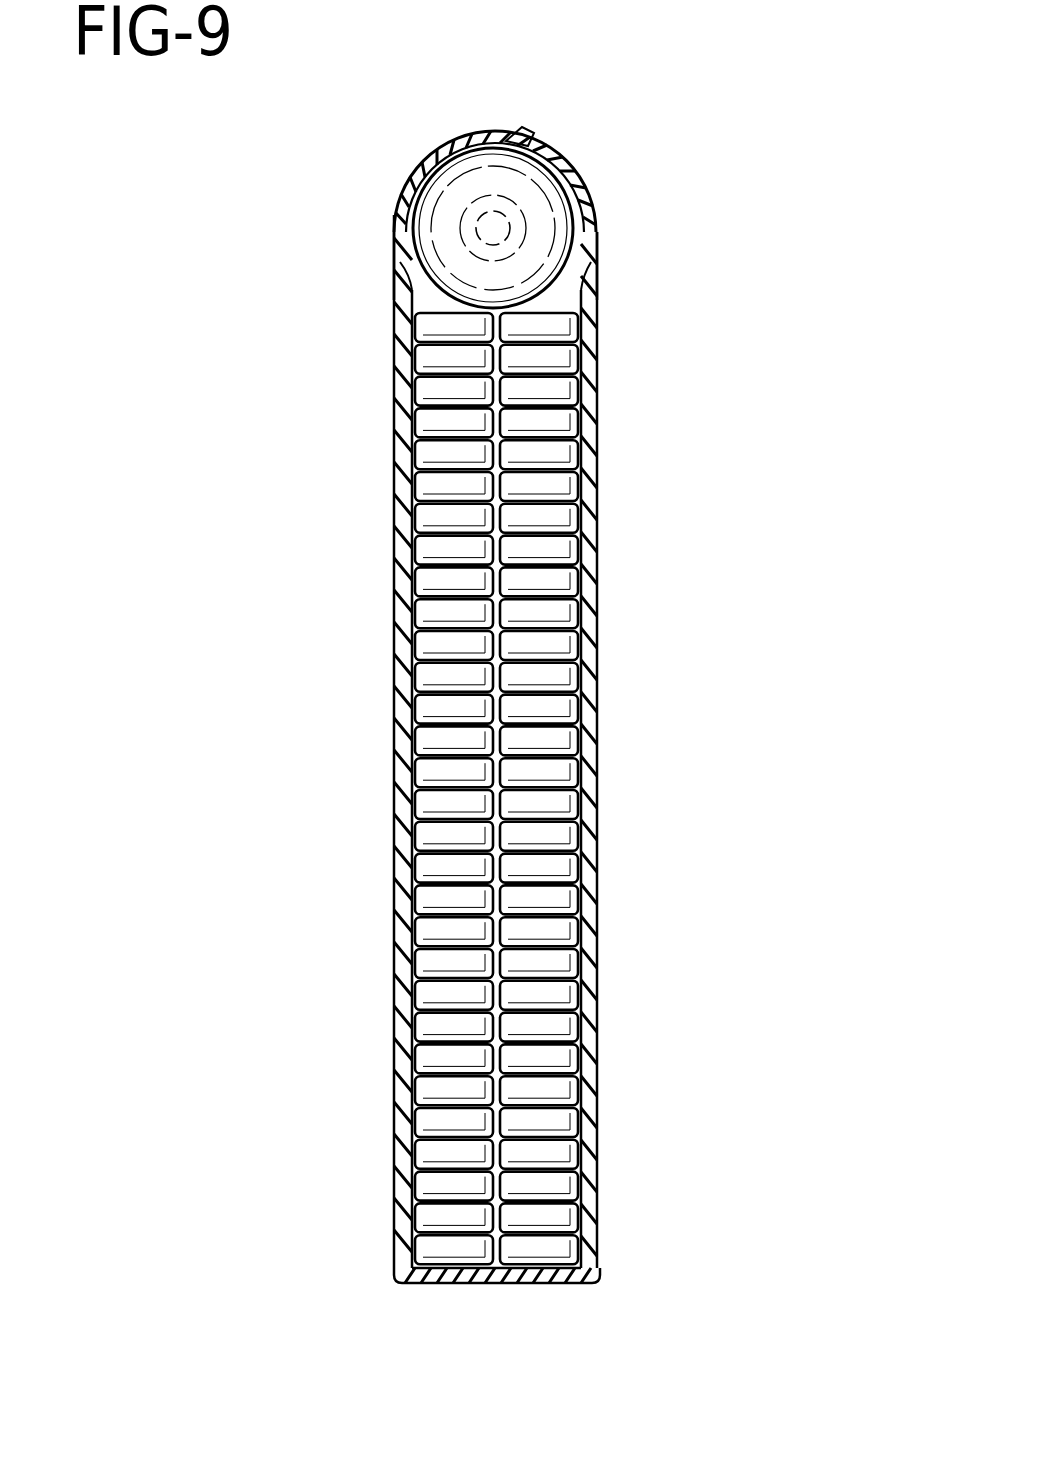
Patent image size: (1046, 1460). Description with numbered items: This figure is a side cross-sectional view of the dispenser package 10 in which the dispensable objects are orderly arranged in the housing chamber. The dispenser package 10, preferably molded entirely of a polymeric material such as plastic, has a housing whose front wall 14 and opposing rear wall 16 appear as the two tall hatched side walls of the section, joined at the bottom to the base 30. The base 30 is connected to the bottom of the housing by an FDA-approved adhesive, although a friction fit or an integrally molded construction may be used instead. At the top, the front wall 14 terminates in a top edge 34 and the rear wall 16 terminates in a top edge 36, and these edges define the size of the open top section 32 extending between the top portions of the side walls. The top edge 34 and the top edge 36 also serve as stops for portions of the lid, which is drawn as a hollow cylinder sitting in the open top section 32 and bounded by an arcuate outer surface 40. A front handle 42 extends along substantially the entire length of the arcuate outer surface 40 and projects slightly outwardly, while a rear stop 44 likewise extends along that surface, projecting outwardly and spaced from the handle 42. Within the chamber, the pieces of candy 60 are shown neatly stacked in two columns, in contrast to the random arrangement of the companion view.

The dispenser package 10 is at (213, 265).
The front wall 14 is at (598, 760).
The rear wall 16 is at (395, 733).
The base 30 is at (592, 1277).
The open top section 32 is at (462, 252).
The top edge 34 is at (592, 207).
The top edge 36 is at (393, 243).
The arcuate outer surface 40 is at (445, 143).
The front handle 42 is at (532, 128).
The rear stop 44 is at (395, 218).
The pieces of candy 60 is at (435, 1023).